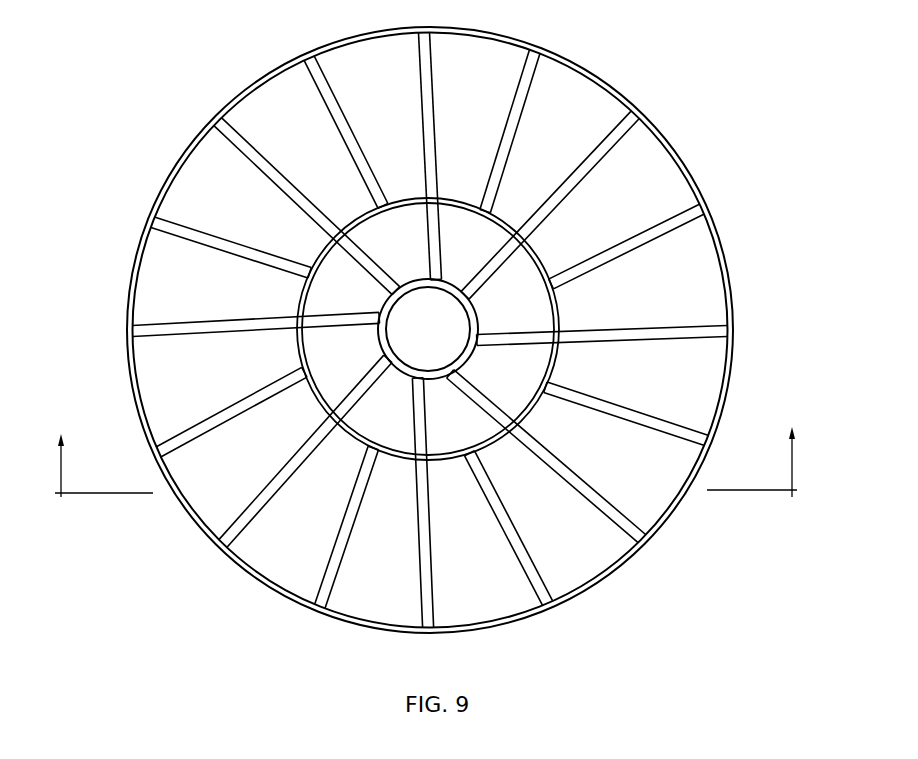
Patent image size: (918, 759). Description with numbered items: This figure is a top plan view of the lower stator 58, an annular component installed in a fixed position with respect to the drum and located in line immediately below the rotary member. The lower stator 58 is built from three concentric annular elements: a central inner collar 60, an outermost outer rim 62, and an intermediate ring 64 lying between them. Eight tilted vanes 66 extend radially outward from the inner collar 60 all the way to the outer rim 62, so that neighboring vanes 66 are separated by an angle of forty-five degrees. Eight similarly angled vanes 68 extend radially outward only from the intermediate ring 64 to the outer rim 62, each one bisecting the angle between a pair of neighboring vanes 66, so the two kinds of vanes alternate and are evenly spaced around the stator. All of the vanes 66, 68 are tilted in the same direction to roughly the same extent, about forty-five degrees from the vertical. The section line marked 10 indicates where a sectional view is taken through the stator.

The lower stator 58 is at (438, 327).
The inner collar 60 is at (387, 298).
The outer rim 62 is at (680, 152).
The intermediate ring 64 is at (541, 262).
The tilted vanes 66 is at (603, 163).
The angled vanes 68 is at (516, 118).
The section line 10- 10 is at (424, 449).